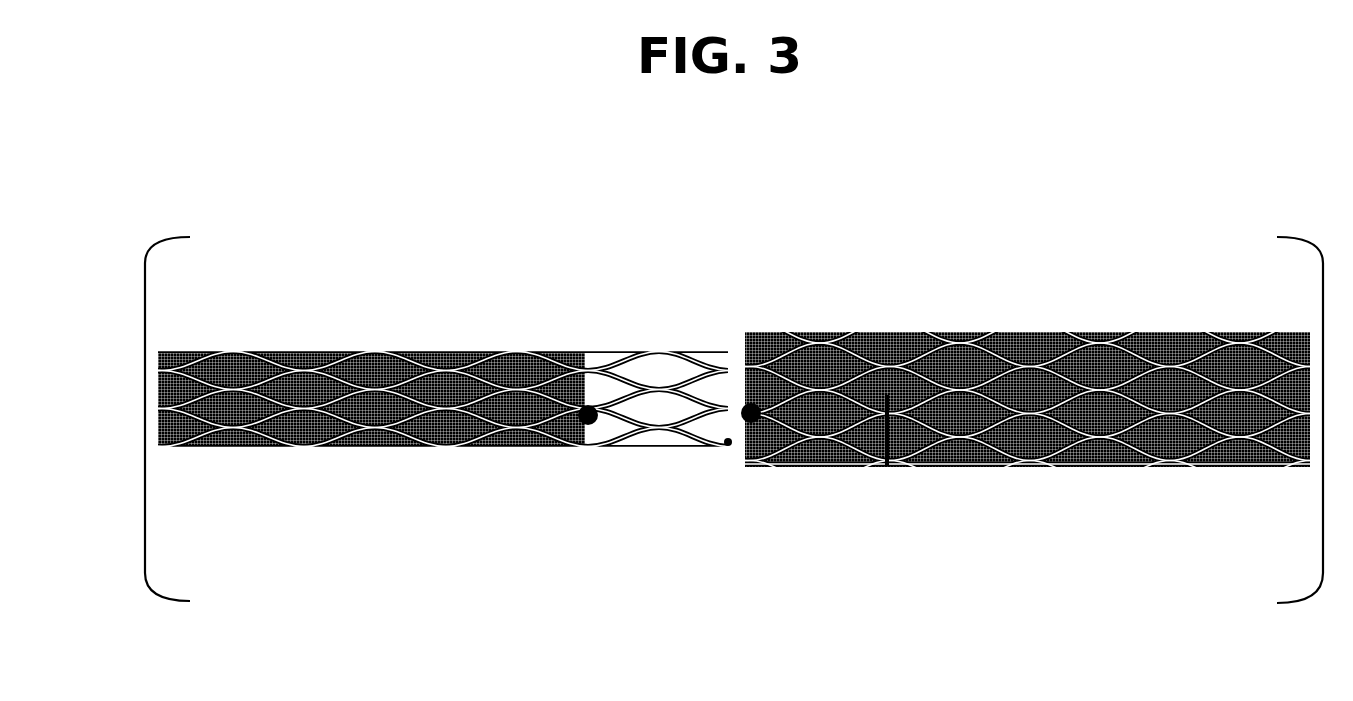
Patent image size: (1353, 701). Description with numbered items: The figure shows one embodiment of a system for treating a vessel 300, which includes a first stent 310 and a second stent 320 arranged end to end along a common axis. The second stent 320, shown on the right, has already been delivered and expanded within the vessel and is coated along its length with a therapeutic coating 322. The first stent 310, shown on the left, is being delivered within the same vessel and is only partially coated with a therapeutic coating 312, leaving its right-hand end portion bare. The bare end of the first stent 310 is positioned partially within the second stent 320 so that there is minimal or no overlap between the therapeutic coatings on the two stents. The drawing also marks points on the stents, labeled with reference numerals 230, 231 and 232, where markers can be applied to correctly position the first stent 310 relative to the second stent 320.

The system for treating a vessel 300 is at (224, 176).
The first stent 310 is at (210, 452).
The therapeutic coating 312 is at (157, 346).
The second stent 320 is at (1183, 470).
The therapeutic coating 322 is at (745, 332).
The connection point 230 is at (588, 422).
The end of first stent 231 is at (728, 442).
The strut of second stent 232 is at (887, 415).